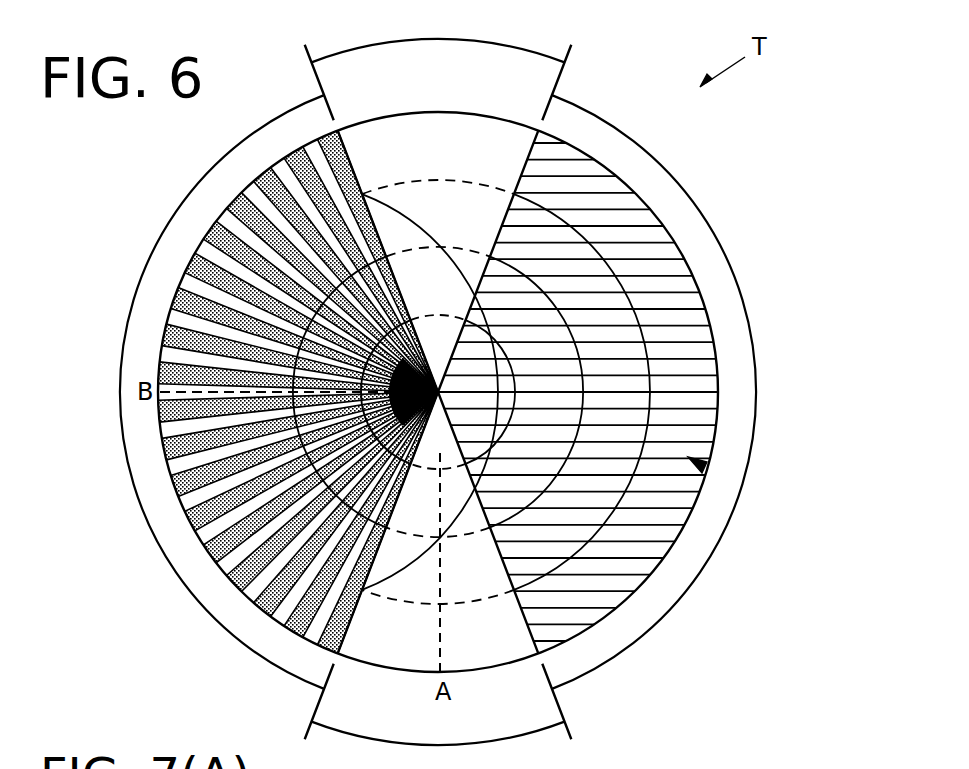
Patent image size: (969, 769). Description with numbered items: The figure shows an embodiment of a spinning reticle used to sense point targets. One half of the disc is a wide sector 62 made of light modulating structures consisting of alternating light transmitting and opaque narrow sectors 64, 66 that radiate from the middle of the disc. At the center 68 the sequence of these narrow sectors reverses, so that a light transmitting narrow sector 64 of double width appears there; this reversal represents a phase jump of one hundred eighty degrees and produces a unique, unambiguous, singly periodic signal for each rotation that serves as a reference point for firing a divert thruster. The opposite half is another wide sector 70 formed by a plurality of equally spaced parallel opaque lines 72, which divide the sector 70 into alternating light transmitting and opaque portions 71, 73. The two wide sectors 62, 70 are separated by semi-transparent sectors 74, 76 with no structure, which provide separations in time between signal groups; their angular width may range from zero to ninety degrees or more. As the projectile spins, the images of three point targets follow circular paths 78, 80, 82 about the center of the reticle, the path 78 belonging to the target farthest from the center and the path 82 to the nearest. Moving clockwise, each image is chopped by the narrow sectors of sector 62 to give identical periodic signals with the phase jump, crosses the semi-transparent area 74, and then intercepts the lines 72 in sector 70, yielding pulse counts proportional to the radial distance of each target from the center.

The wide sector 62 is at (147, 258).
The light transmitting narrow sector 64 is at (228, 563).
The opaque narrow sector 66 is at (262, 608).
The center 68 is at (157, 402).
The wide sector 70 is at (763, 395).
The light transmitting portion 71 is at (668, 507).
The parallel opaque line 72 is at (705, 469).
The opaque portion 73 is at (637, 532).
The semi-transparent sector 74 is at (372, 42).
The semi-transparent sector 76 is at (493, 737).
The circular path 78 is at (492, 600).
The circular path 80 is at (480, 543).
The circular path 82 is at (428, 466).